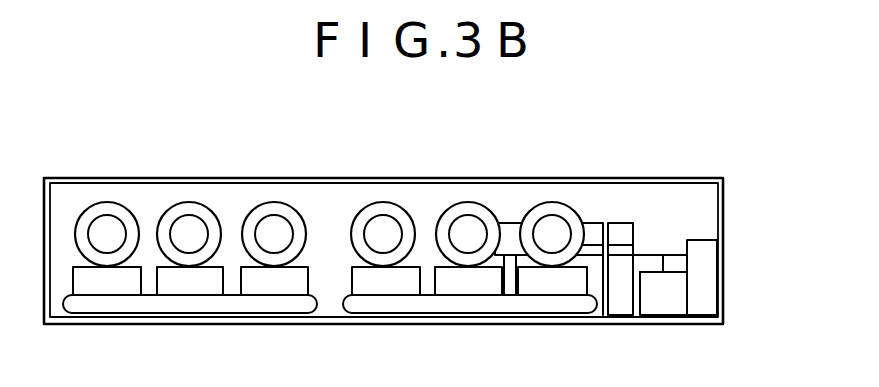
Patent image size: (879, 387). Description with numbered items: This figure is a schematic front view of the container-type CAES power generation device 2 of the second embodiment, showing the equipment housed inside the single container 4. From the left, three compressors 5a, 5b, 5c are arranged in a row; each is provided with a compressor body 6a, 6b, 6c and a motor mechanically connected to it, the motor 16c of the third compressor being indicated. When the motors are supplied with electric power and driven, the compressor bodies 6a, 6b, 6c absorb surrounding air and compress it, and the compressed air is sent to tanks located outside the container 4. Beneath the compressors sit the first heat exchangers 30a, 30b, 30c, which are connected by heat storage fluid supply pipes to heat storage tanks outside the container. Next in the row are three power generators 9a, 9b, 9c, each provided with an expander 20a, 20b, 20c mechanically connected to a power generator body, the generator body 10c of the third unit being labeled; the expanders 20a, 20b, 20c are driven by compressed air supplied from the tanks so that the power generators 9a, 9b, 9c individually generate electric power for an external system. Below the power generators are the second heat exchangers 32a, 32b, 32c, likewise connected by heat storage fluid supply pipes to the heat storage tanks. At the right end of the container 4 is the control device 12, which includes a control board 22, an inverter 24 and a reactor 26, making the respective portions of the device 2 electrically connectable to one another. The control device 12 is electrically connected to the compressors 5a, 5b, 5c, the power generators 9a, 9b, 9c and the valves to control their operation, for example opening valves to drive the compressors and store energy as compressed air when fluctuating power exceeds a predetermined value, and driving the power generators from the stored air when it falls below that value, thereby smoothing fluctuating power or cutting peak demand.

The container-type CAES power generation device 2 is at (743, 143).
The container 4 is at (620, 181).
The compressor 5a is at (114, 193).
The compressor 5b is at (203, 193).
The compressor 5c is at (307, 193).
The compressor body 6a is at (107, 202).
The compressor body 6b is at (188, 202).
The compressor body 6c is at (273, 202).
The power generator 9a is at (403, 194).
The power generator 9b is at (497, 194).
The power generator 9c is at (587, 196).
The power generator body 10c is at (577, 216).
The control device 12 is at (732, 325).
The motor 16c is at (293, 235).
The expander 20a is at (383, 202).
The expander 20b is at (468, 202).
The expander 20c is at (552, 202).
The control board 22 is at (715, 272).
The inverter 24 is at (623, 314).
The reactor 26 is at (630, 235).
The first heat exchanger 30a is at (88, 288).
The first heat exchanger 30b is at (182, 288).
The first heat exchanger 30c is at (270, 288).
The second heat exchanger 32a is at (382, 285).
The second heat exchanger 32b is at (465, 285).
The second heat exchanger 32c is at (553, 285).